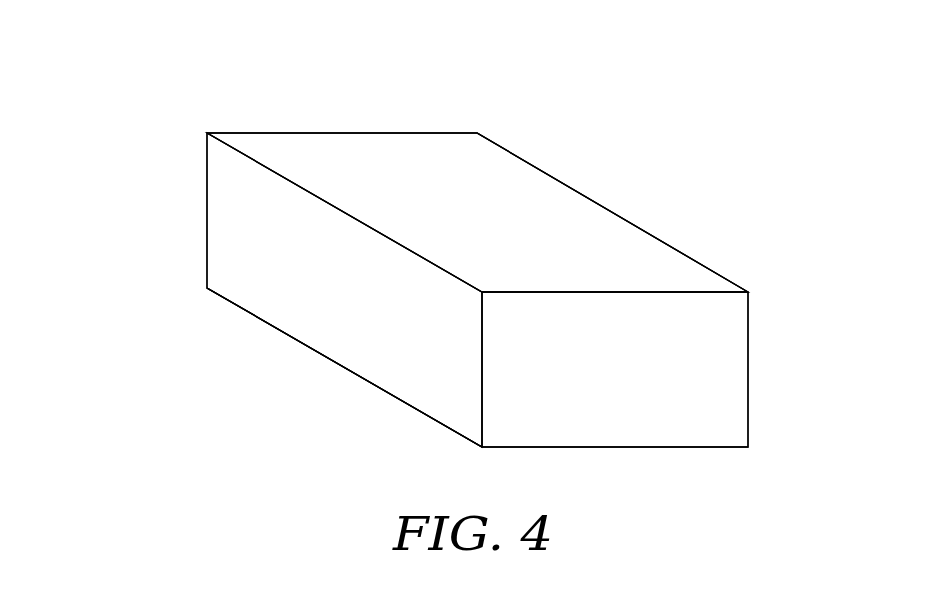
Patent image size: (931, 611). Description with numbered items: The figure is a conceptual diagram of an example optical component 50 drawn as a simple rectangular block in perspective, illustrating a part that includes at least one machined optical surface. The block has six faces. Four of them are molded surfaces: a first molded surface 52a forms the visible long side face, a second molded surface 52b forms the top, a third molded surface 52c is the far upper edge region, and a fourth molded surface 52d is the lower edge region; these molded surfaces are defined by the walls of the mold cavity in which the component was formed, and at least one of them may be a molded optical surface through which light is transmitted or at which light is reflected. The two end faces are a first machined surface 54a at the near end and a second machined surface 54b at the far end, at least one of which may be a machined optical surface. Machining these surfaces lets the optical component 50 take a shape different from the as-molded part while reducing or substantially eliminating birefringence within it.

The optical component 50 is at (120, 77).
The first molded surface 52a is at (300, 291).
The second molded surface 52b is at (543, 208).
The third molded surface 52c is at (705, 265).
The fourth molded surface 52d is at (402, 402).
The first machined surface 54a is at (712, 375).
The second machined surface 54b is at (207, 181).